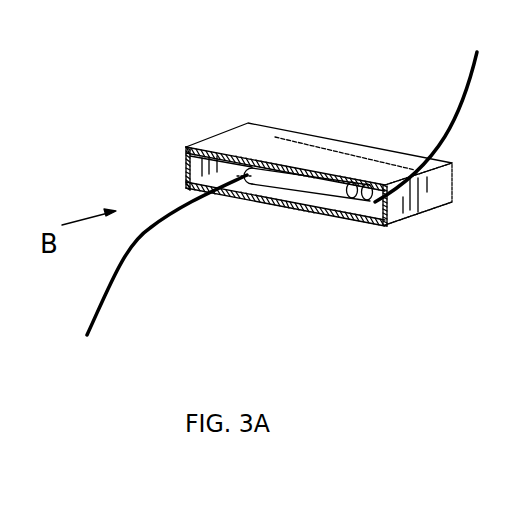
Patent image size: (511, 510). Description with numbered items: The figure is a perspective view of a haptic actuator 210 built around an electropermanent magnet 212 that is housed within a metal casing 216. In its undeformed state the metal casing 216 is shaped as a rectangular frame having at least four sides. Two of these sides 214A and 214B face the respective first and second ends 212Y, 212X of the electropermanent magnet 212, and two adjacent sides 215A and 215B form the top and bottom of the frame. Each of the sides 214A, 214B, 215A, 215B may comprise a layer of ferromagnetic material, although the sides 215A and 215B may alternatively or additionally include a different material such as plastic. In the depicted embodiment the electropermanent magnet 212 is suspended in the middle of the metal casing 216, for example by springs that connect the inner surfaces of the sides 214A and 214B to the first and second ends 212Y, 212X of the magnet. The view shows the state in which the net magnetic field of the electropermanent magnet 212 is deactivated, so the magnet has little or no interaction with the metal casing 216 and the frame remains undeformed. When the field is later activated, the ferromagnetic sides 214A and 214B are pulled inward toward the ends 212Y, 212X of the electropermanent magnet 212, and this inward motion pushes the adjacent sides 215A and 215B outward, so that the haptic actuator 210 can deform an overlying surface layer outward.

The haptic actuator 210 is at (116, 148).
The electropermanent magnet 212 is at (308, 199).
The second end of the electropermanent magnet 212X is at (440, 110).
The first end of the electropermanent magnet 212Y is at (152, 269).
The side of the metal casing 214A is at (176, 153).
The side of the metal casing 214B is at (430, 203).
The side of the metal casing 215A is at (283, 138).
The side of the metal casing 215B is at (237, 195).
The metal casing 216 is at (372, 222).